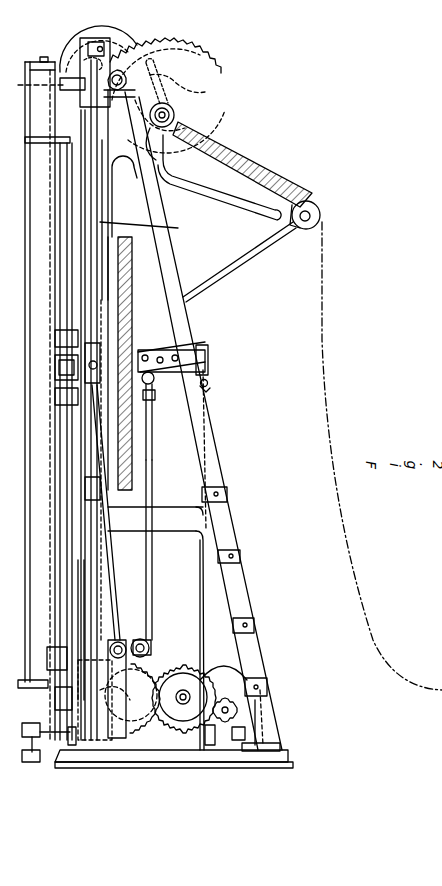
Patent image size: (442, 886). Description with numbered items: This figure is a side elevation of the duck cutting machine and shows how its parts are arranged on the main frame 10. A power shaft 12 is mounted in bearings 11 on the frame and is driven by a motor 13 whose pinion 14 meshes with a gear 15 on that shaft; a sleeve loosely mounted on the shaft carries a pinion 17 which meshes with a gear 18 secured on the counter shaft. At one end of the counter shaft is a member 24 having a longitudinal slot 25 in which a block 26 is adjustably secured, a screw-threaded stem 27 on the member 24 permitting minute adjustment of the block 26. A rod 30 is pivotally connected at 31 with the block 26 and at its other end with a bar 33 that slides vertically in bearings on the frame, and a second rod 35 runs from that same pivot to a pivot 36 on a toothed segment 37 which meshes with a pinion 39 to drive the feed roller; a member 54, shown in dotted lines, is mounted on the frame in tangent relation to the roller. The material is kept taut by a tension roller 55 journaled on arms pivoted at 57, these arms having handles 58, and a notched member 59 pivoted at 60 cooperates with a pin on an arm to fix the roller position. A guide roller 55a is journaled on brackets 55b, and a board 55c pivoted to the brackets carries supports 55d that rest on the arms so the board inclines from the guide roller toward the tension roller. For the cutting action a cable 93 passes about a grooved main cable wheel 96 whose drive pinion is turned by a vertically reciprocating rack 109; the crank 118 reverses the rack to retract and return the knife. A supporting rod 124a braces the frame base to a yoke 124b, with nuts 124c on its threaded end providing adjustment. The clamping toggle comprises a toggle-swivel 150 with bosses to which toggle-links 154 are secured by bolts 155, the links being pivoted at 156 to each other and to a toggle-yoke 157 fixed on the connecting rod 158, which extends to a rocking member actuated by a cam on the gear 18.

The main frame 10 is at (237, 578).
The bearings 11 is at (195, 703).
The power shaft 12 is at (195, 676).
The motor 13 is at (244, 677).
The pinion 14 is at (237, 710).
The gear 15 is at (190, 668).
The pinion 17 is at (183, 688).
The gear 18 is at (152, 660).
The slotted member 24 is at (100, 690).
The slot 25 is at (140, 730).
The block 26 is at (112, 578).
The screw-threaded stem 27 is at (105, 720).
The rod 30 is at (138, 590).
The pivot 31 is at (108, 650).
The bar 33 is at (96, 245).
The second rod 35 is at (108, 178).
The pivot 36 is at (121, 73).
The toothed segment 37 is at (188, 80).
The pinion 39 is at (68, 100).
The member 54 is at (34, 85).
The tension roller 55 is at (133, 100).
The guide roller 55a is at (318, 201).
The brackets 55b is at (238, 262).
The board 55c is at (243, 165).
The supports 55d is at (196, 99).
The pivot 57 is at (172, 152).
The handles 58 is at (222, 200).
The notched member 59 is at (167, 60).
The pivot 60 is at (130, 133).
The cable 93 is at (148, 229).
The main cable wheel 96 is at (131, 304).
The rack 109 is at (100, 412).
The crank 118 is at (125, 749).
The supporting rod 124a is at (203, 548).
The yoke 124b is at (208, 360).
The nuts 124c is at (208, 392).
The toggle-swivel 150 is at (195, 343).
The toggle-links 154 is at (208, 383).
The bolts 155 is at (156, 360).
The pivot 156 is at (152, 383).
The toggle-yoke 157 is at (153, 405).
The connecting rod 158 is at (150, 550).